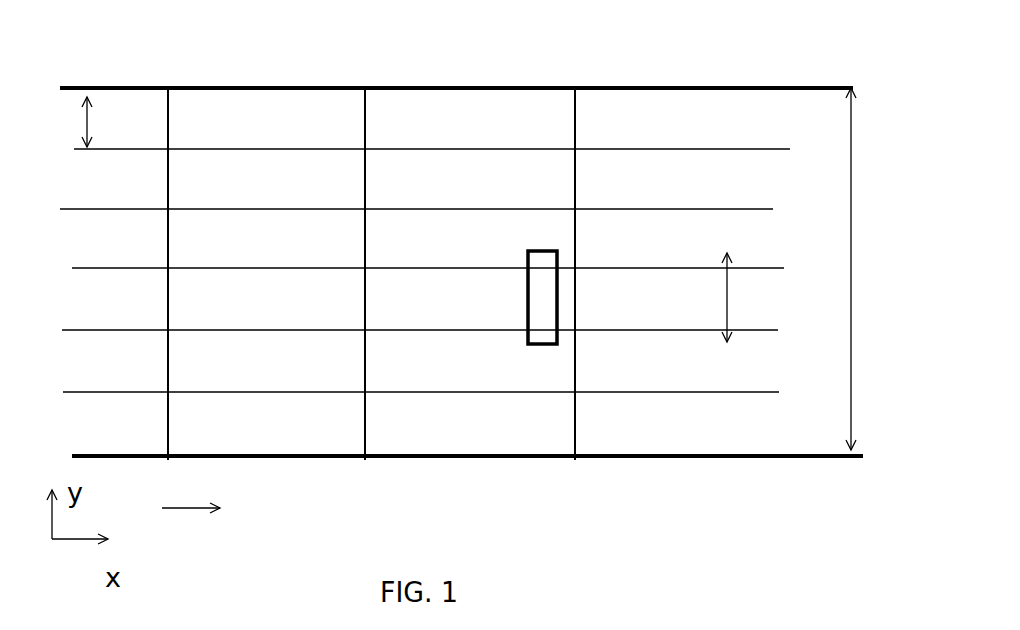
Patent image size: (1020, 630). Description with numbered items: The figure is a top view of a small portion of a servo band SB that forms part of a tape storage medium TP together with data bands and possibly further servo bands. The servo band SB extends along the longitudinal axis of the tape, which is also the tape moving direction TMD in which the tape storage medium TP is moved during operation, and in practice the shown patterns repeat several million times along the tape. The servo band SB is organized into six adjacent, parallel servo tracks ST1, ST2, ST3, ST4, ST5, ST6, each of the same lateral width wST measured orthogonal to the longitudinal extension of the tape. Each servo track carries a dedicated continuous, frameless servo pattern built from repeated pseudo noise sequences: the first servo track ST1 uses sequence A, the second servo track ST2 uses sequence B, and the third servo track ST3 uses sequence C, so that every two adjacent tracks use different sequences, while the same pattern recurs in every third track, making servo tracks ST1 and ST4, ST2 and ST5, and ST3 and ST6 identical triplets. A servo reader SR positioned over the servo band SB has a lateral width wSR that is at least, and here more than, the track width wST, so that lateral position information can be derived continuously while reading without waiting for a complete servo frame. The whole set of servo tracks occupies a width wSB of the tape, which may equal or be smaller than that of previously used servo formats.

The tape storage medium TP is at (283, 52).
The servo band SB is at (368, 460).
The servo track ST1 is at (670, 120).
The servo track ST2 is at (670, 183).
The servo track ST3 is at (673, 240).
The servo track ST4 is at (673, 300).
The servo track ST5 is at (673, 362).
The servo track ST6 is at (673, 420).
The servo reader SR is at (540, 344).
The width of servo track wST is at (58, 122).
The width of servo band wSB is at (820, 269).
The width of servo reader wSR is at (758, 297).
The tape moving direction TMD is at (211, 491).